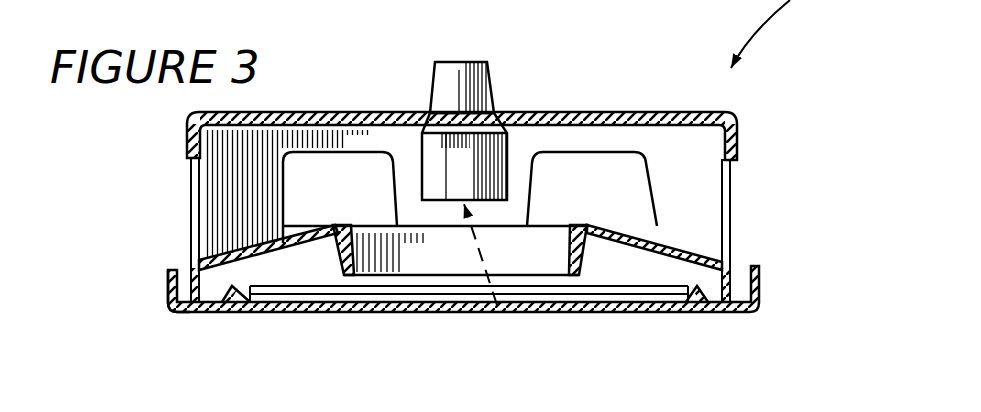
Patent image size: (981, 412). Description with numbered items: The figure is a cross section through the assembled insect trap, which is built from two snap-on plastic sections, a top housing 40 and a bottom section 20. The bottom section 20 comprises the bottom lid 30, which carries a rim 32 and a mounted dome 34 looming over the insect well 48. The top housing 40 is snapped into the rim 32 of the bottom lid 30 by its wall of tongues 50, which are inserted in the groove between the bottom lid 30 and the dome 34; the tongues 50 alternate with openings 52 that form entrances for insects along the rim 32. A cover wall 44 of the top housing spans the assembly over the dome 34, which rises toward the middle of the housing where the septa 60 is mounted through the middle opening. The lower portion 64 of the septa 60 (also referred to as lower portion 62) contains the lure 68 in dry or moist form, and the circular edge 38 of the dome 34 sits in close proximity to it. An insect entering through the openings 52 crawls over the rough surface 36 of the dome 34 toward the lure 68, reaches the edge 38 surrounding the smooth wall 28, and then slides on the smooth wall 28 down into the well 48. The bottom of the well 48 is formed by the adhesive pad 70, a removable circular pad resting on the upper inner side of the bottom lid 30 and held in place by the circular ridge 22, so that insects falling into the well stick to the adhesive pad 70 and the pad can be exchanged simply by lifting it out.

The bottom section 20 is at (153, 315).
The circular ridge 22 is at (231, 307).
The smooth wall 28 is at (354, 245).
The bottom lid 30 is at (760, 278).
The rim 32 is at (184, 266).
The dome 34 is at (702, 245).
The rough surface 36 is at (316, 224).
The circular edge 38 is at (592, 212).
The top housing 40 is at (741, 116).
The cover top wall 44 is at (322, 111).
The well 48 is at (416, 282).
The tongues 50 is at (228, 207).
The openings 52 is at (290, 178).
The septa 60 is at (428, 58).
The lower portion 62 is at (510, 148).
The lower portion 64 is at (499, 82).
The lure 68 is at (500, 313).
The adhesive pad 70 is at (581, 290).